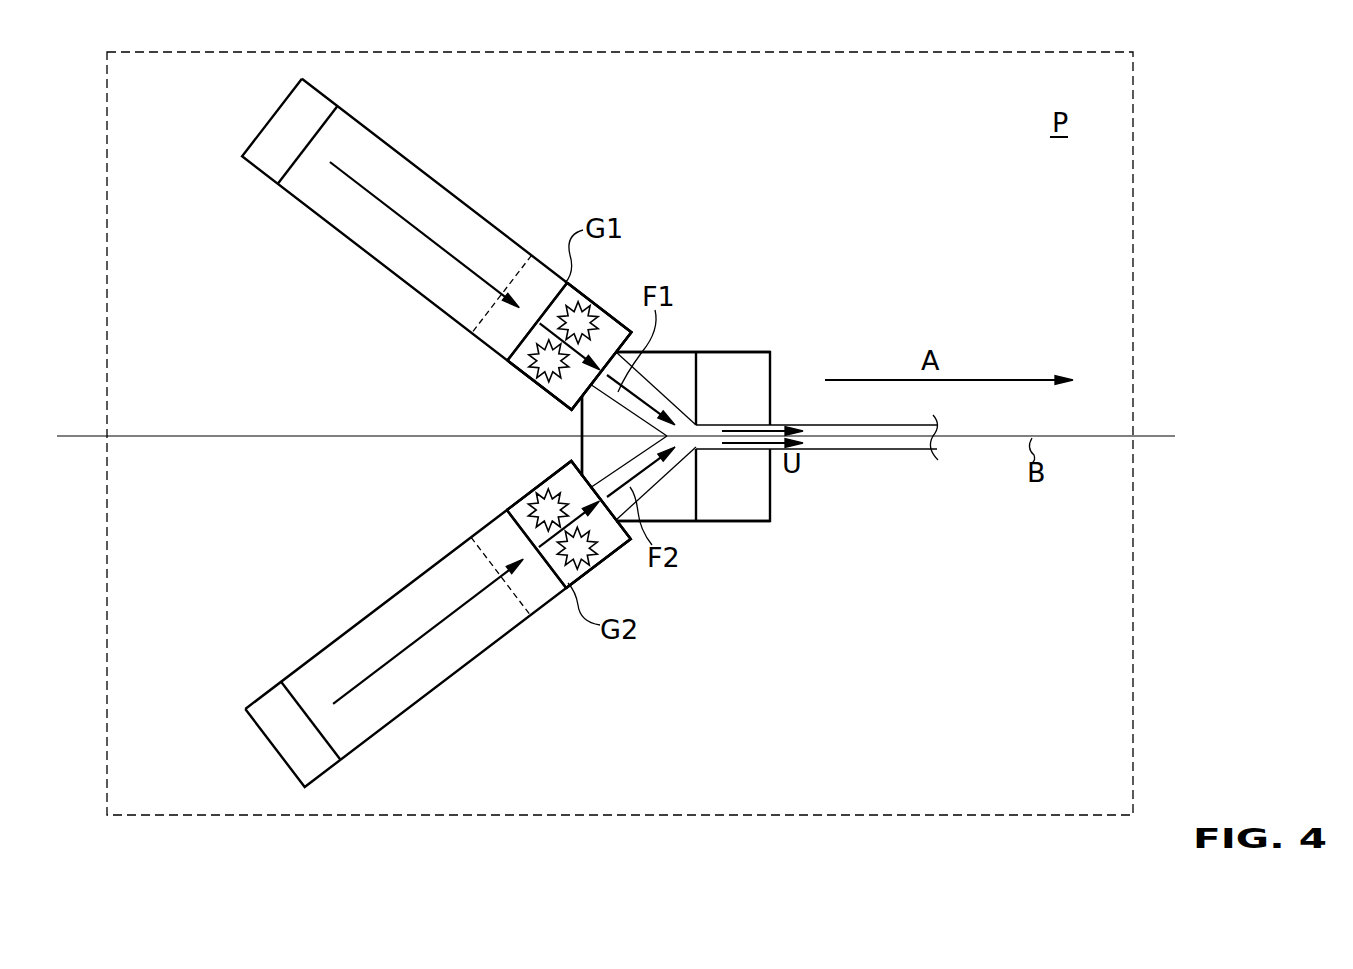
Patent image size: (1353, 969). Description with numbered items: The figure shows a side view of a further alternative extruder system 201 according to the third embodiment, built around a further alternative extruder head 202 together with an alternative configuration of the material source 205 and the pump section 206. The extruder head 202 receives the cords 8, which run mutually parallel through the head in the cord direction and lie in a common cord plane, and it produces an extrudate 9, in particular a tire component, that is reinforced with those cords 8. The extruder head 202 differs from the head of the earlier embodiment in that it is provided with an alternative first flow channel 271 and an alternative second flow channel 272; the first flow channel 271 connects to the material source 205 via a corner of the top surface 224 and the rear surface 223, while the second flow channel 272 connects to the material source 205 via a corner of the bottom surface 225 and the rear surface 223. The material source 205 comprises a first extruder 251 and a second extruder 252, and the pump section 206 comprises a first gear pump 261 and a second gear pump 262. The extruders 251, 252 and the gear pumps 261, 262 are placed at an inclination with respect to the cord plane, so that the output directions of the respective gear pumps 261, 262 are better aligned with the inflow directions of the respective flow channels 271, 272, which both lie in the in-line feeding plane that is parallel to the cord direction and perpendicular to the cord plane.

The cords 8 is at (75, 435).
The extrudate 9 is at (862, 443).
The extruder system 201 is at (819, 173).
The extruder head 202 is at (650, 427).
The material source 205 is at (375, 607).
The pump section 206 is at (527, 370).
The rear surface 223 is at (580, 453).
The top surface 224 is at (670, 351).
The bottom surface 225 is at (745, 522).
The first extruder 251 is at (458, 244).
The second extruder 252 is at (466, 624).
The first gear pump 261 is at (610, 318).
The second gear pump 262 is at (612, 540).
The first flow channel 271 is at (672, 398).
The second flow channel 272 is at (667, 477).